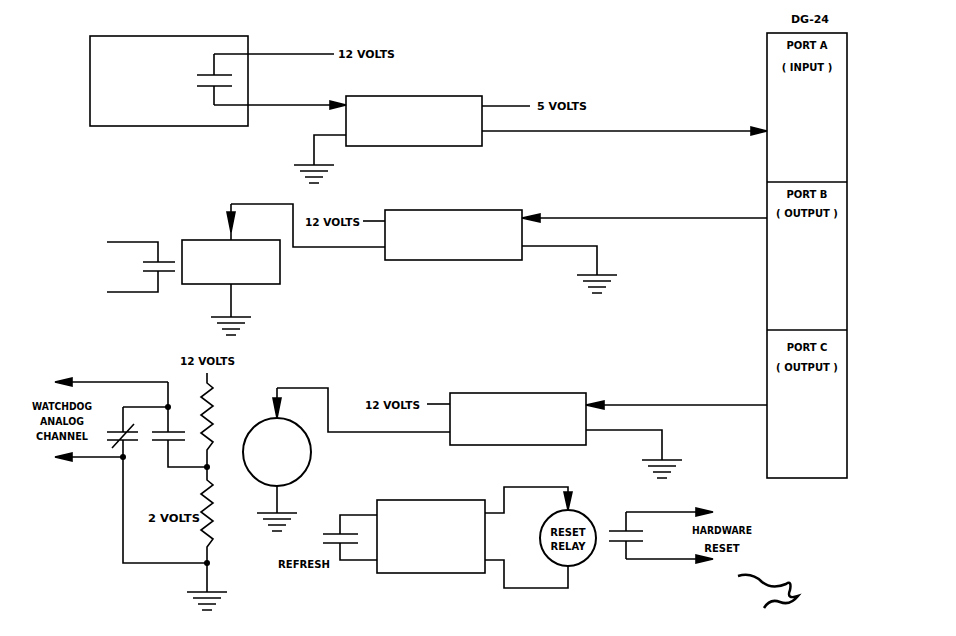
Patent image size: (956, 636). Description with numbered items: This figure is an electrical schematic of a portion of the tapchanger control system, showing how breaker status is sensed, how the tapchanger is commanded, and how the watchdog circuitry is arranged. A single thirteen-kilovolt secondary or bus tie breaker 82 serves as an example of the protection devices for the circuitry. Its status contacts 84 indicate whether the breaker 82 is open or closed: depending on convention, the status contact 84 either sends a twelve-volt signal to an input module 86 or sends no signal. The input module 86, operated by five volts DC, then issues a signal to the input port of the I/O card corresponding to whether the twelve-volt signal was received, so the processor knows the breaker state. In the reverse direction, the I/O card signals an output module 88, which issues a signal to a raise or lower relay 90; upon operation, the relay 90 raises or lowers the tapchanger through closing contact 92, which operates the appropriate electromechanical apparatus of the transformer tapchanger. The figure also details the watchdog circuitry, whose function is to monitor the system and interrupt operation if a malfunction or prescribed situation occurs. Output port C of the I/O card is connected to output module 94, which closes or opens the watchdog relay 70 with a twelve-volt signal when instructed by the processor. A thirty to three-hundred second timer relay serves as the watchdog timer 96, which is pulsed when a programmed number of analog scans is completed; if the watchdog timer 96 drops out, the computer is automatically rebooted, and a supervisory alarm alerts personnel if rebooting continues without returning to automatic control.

The watchdog relay 70 is at (300, 462).
The 13 kV secondary or bus tie breaker 82 is at (103, 135).
The status contacts 84 is at (97, 116).
The input module 86 is at (412, 96).
The output module 88 is at (440, 210).
The raise or lower relay 90 is at (268, 284).
The tapchanger raise or lower contact 92 is at (135, 240).
The output module 94 is at (500, 395).
The watchdog timer 96 is at (410, 505).